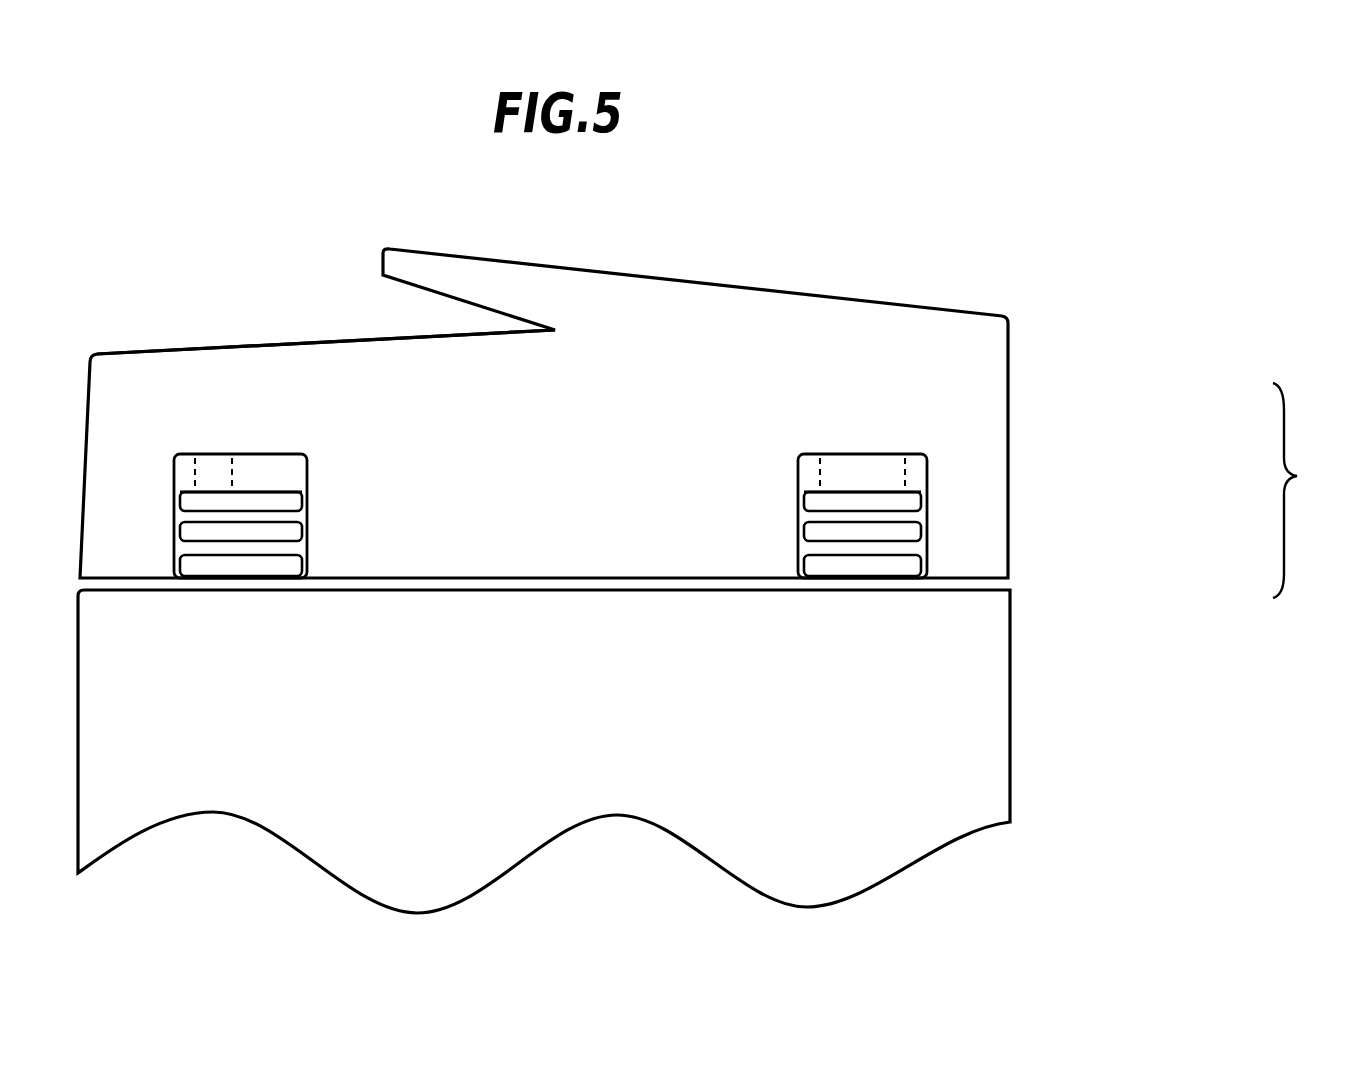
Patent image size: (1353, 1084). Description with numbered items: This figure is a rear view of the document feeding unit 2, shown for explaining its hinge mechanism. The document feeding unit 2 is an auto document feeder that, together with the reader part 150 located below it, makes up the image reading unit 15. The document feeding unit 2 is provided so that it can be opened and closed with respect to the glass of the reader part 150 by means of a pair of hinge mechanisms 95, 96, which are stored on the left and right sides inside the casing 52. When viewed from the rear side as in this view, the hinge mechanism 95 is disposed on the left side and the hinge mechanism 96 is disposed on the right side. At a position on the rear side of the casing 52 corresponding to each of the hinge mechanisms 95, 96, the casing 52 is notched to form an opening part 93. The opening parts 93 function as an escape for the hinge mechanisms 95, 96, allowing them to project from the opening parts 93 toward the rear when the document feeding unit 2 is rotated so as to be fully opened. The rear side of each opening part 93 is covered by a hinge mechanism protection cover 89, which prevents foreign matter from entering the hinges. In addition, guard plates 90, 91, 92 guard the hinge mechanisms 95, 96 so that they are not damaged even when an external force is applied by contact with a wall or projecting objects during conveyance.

The document feeding unit 2 is at (1030, 408).
The image reading unit 15 is at (1313, 490).
The casing 52 is at (238, 360).
The hinge mechanism protection cover 89 is at (280, 483).
The guard plate 90 is at (295, 503).
The guard plate 91 is at (300, 535).
The guard plate 92 is at (314, 557).
The opening part 93 is at (232, 453).
The hinge mechanism 95 is at (265, 432).
The hinge mechanism 96 is at (865, 434).
The reader part 150 is at (1035, 637).